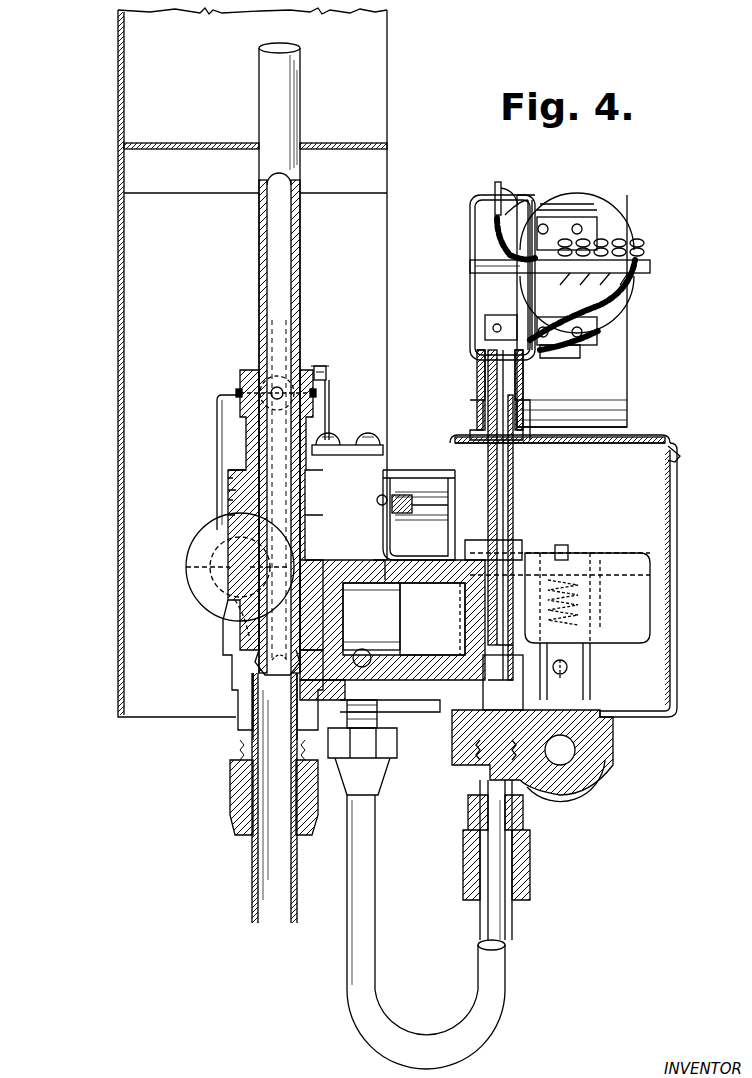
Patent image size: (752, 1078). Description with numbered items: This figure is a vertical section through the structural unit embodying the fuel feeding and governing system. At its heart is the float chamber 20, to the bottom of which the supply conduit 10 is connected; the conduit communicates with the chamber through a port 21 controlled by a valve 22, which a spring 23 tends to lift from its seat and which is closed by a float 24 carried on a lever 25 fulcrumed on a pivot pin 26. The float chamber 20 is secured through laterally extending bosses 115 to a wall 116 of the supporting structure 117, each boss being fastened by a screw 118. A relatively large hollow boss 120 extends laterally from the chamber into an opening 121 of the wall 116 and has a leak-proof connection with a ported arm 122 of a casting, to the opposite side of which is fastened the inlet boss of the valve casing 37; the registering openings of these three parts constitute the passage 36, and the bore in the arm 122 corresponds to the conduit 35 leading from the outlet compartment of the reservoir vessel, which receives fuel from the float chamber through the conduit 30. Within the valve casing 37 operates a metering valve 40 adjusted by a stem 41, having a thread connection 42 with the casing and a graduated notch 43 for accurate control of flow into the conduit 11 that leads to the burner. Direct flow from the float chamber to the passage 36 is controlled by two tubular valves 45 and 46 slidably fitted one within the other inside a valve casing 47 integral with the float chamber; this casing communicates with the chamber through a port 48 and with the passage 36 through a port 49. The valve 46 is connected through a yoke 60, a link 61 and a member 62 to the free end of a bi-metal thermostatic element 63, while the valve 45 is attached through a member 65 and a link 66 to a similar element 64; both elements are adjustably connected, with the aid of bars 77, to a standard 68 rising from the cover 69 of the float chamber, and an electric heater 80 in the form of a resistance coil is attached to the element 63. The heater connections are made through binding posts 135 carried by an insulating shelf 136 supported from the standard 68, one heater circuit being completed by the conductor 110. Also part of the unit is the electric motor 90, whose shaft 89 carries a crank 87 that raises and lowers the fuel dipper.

The conduit 10 is at (566, 752).
The conduit 11 is at (248, 881).
The float chamber 20 is at (679, 540).
The port 21 is at (568, 665).
The valve 22 is at (565, 672).
The spring 23 is at (585, 622).
The float 24 is at (586, 602).
The lever 25 is at (565, 546).
The pivot pin 26 is at (615, 562).
The conduit 30 is at (380, 1012).
The conduit 35 is at (372, 667).
The passage 36 is at (345, 617).
The valve casing 37 is at (236, 602).
The metering valve 40 is at (282, 594).
The stem 41 is at (283, 272).
The thread connection 42 is at (240, 487).
The graduated notch 43 is at (262, 680).
The inner tubular valve 45 is at (498, 486).
The outer tubular valve 46 is at (514, 516).
The valve casing 47 is at (526, 548).
The port 48 is at (503, 665).
The port 49 is at (470, 642).
The yoke 60 is at (478, 386).
The link 61 is at (472, 290).
The member 62 is at (500, 186).
The thermostatic element 63 is at (566, 212).
The thermostatic element 64 is at (548, 354).
The member 65 is at (487, 318).
The link 66 is at (494, 330).
The standard 68 is at (612, 372).
The cover 69 is at (636, 437).
The bars 77 is at (598, 226).
The electric heater 80 is at (500, 217).
The crank 87 is at (331, 425).
The shaft 89 is at (332, 396).
The electric motor 90 is at (219, 416).
The conductor 110 is at (185, 572).
The bosses 115 is at (425, 492).
The wall 116 is at (384, 538).
The supporting structure 117 is at (140, 300).
The screw 118 is at (379, 502).
The hollow boss 120 is at (434, 678).
The opening 121 is at (392, 562).
The ported arm 122 is at (374, 562).
The binding posts 135 is at (615, 240).
The shelf 136 is at (652, 266).